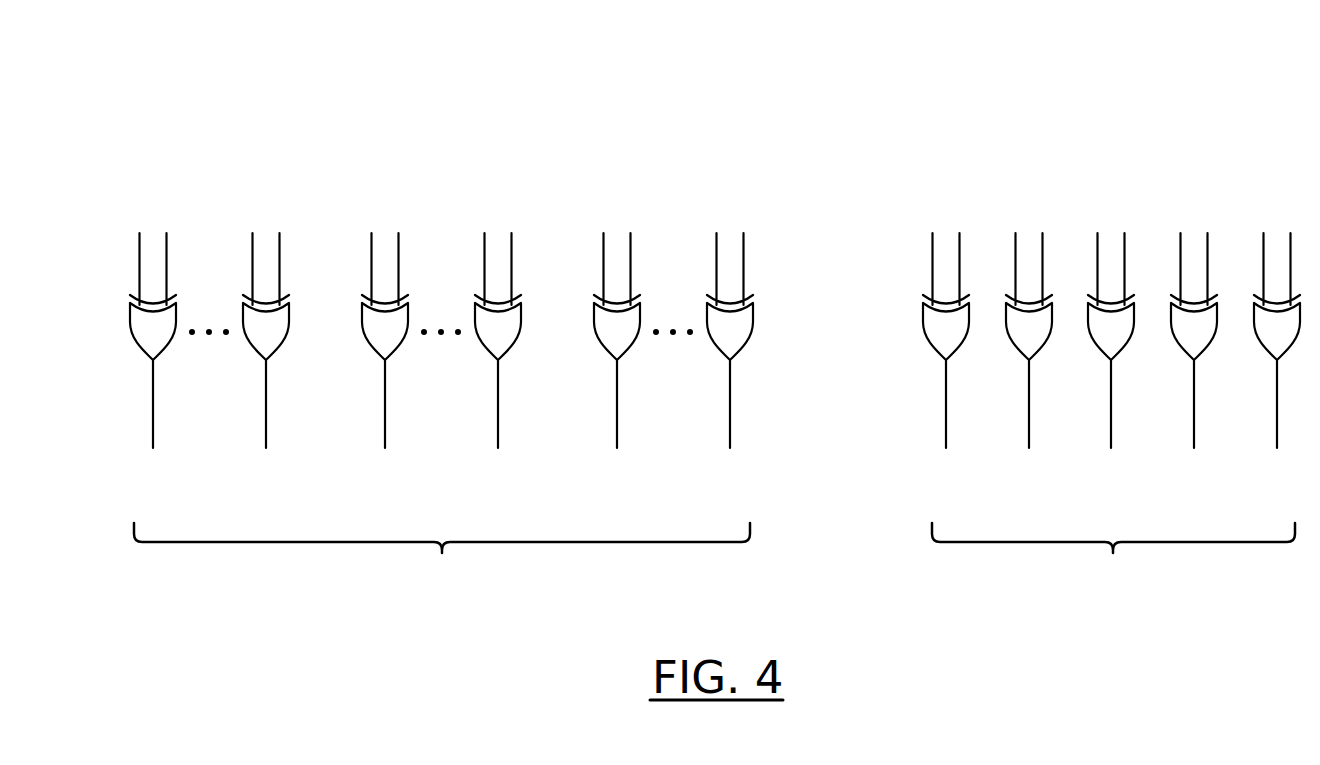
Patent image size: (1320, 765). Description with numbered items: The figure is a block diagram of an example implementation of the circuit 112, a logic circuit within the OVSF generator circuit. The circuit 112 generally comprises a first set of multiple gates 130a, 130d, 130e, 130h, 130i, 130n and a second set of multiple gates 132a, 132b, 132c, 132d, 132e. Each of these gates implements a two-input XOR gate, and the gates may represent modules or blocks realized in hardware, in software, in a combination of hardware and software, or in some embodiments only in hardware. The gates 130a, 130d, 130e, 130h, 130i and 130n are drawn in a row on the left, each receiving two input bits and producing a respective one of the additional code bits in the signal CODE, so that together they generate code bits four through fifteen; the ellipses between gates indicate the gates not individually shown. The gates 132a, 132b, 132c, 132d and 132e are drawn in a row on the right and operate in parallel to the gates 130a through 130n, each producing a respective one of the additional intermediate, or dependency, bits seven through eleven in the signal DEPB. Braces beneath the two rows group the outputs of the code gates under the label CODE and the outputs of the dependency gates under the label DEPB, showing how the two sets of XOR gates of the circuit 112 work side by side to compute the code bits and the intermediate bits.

The circuit 112 is at (698, 76).
The gate 130a is at (128, 340).
The gate 130d is at (241, 340).
The gate 130e is at (360, 340).
The gate 130h is at (473, 340).
The gate 130i is at (594, 340).
The gate 130n is at (705, 340).
The gate 132a is at (921, 340).
The gate 132b is at (1004, 340).
The gate 132c is at (1086, 340).
The gate 132d is at (1169, 340).
The gate 132e is at (1252, 340).